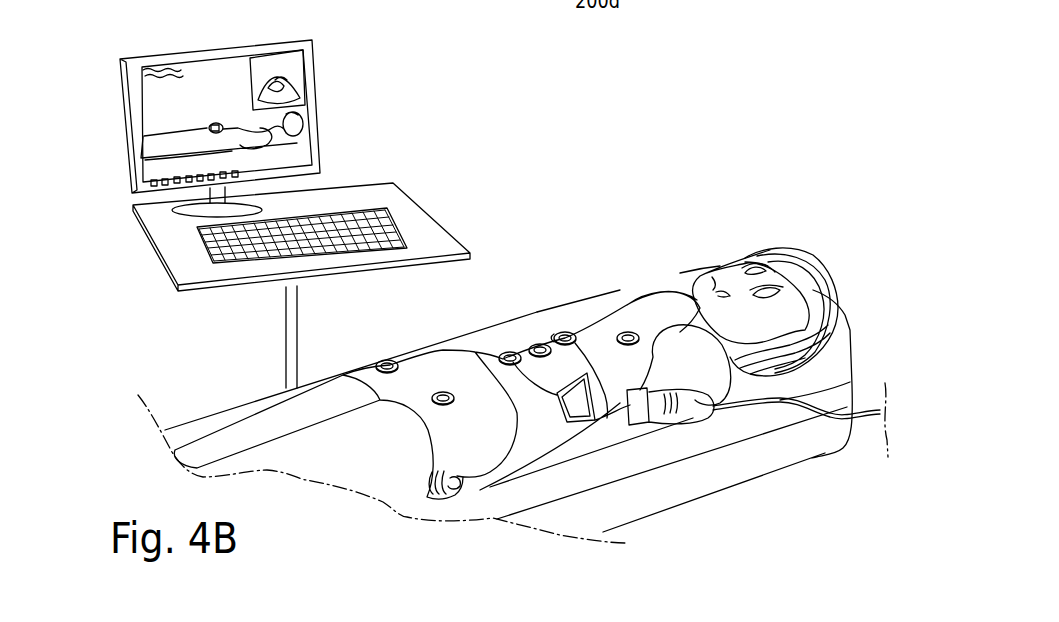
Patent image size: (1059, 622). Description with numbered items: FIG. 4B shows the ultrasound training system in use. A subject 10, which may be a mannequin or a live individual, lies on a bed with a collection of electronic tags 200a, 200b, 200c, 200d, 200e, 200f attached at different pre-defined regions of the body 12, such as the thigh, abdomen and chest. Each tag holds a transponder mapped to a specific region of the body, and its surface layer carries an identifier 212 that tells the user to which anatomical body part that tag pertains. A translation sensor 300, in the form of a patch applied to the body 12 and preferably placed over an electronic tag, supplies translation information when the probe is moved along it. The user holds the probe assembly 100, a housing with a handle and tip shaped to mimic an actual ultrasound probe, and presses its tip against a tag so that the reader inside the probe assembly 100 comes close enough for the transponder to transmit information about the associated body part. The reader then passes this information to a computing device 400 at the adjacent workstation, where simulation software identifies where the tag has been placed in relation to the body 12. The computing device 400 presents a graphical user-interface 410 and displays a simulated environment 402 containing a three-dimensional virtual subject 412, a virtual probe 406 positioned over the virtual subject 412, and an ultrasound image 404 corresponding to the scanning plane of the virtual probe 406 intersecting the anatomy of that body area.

The subject 10 is at (803, 229).
The body 12 is at (778, 247).
The probe assembly 100 is at (687, 422).
The electronic tag 200a is at (383, 364).
The electronic tag 200b is at (434, 403).
The electronic tag 200c is at (510, 364).
The electronic tag 200d is at (540, 357).
The electronic tag 200e is at (567, 334).
The electronic tag 200f is at (629, 334).
The identifier 212 is at (557, 336).
The translation sensor 300 is at (583, 413).
The computing device 400 is at (88, 67).
The simulated environment 402 is at (163, 104).
The ultrasound image 404 is at (281, 73).
The virtual probe 406 is at (223, 126).
The graphical user-interface 410 is at (155, 60).
The virtual subject 412 is at (274, 85).